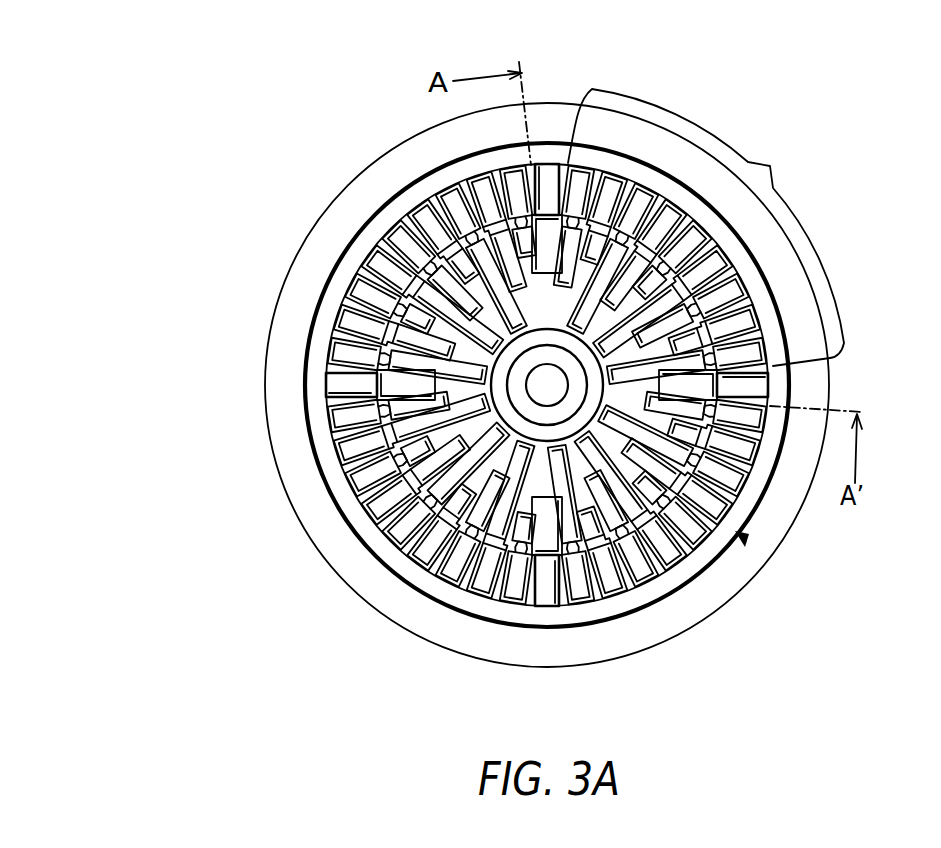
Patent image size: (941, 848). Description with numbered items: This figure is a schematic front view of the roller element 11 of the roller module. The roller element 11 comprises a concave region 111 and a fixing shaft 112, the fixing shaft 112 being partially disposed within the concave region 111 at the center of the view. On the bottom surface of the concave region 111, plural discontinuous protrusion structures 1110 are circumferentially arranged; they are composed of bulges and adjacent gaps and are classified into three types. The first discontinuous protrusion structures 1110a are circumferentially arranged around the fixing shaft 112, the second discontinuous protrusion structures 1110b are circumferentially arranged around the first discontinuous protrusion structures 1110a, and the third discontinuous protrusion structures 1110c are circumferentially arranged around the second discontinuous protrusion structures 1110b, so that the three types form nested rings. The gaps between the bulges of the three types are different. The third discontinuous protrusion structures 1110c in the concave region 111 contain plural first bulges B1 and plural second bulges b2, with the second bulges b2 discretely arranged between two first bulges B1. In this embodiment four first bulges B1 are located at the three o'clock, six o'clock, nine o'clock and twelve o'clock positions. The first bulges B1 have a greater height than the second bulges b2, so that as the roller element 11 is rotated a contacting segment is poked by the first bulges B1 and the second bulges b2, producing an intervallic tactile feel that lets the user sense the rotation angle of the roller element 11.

The roller element 11 is at (390, 173).
The concave region 111 is at (746, 542).
The fixing shaft 112 is at (547, 385).
The discontinuous protrusion structures 1110 is at (421, 385).
The first discontinuous protrusion structures 1110a is at (383, 230).
The second discontinuous protrusion structures 1110b is at (395, 296).
The third discontinuous protrusion structures 1110c is at (357, 350).
The first bulges B1 is at (550, 172).
The second bulges b2 is at (706, 227).